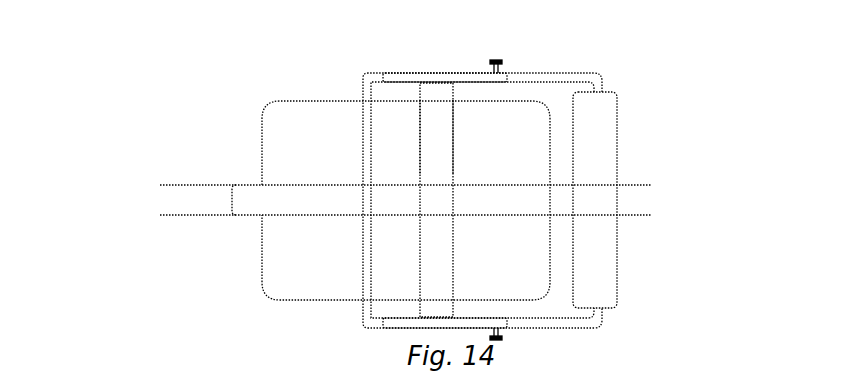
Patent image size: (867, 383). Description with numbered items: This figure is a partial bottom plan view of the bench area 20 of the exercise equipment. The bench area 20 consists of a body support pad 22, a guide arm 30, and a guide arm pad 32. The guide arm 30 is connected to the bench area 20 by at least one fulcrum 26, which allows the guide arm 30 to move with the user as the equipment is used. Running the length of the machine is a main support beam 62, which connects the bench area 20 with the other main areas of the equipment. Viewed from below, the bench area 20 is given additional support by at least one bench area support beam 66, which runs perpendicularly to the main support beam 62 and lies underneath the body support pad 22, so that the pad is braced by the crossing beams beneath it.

The bench area 20 is at (708, 160).
The body support pad 22 is at (286, 137).
The fulcrum 26 is at (429, 83).
The guide arm 30 is at (405, 325).
The guide arm pad 32 is at (605, 284).
The main support beam 62 is at (295, 203).
The bench area support beam 66 is at (440, 137).